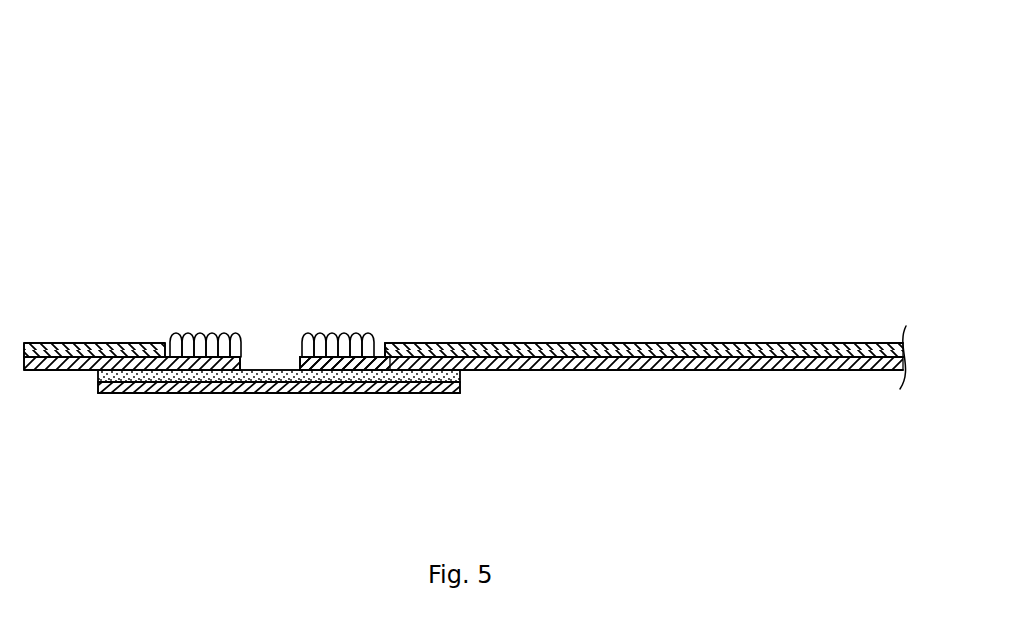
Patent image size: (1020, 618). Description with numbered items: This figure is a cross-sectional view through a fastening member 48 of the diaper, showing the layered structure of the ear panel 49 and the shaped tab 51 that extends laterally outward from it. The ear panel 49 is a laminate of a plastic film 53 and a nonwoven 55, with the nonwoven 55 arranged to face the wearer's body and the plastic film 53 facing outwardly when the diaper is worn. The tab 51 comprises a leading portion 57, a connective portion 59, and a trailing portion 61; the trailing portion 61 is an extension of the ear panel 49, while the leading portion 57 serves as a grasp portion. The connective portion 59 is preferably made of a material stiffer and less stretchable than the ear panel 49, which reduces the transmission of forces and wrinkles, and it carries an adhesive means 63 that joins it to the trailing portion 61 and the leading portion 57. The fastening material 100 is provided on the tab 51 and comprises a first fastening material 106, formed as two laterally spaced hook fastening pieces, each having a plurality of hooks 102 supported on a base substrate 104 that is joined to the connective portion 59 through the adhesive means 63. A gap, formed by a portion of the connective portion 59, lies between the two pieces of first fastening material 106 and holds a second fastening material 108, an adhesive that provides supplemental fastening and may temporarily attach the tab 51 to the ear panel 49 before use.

The fastening member 48 is at (494, 118).
The ear panel 49 is at (700, 279).
The tab 51 is at (189, 428).
The plastic film 53 is at (762, 370).
The nonwoven 55 is at (812, 343).
The leading portion 57 is at (97, 343).
The connective portion 59 is at (268, 393).
The trailing portion 61 is at (437, 343).
The adhesive means 63 is at (282, 368).
The fastening material 100 is at (228, 155).
The hooks 102 is at (174, 340).
The base substrate 104 is at (243, 338).
The first fastening material 106 is at (215, 228).
The second fastening material 108 is at (262, 368).